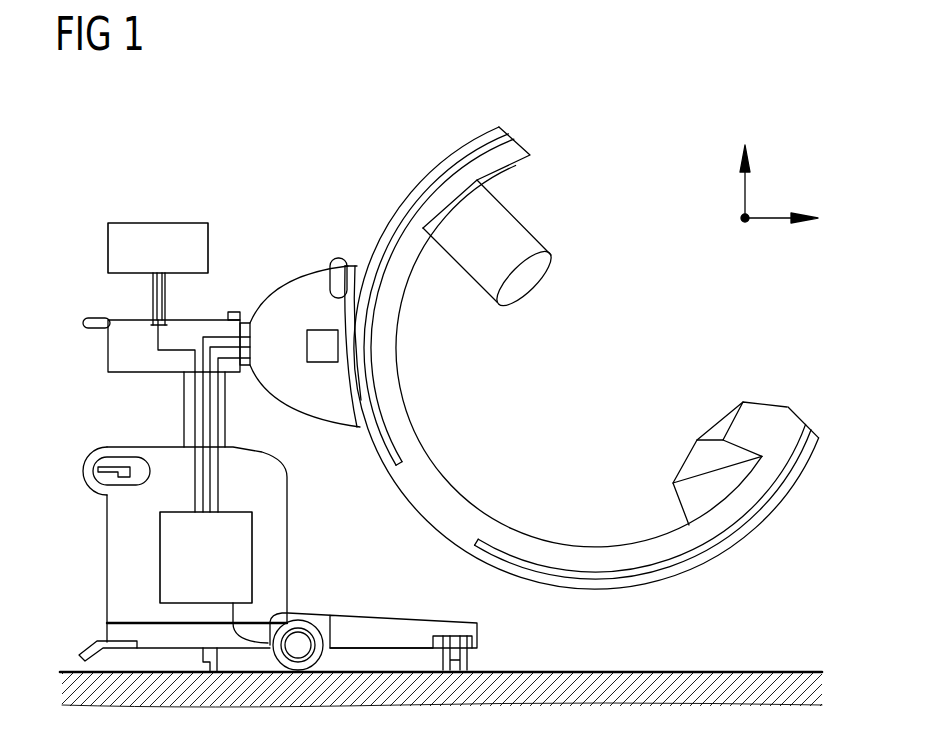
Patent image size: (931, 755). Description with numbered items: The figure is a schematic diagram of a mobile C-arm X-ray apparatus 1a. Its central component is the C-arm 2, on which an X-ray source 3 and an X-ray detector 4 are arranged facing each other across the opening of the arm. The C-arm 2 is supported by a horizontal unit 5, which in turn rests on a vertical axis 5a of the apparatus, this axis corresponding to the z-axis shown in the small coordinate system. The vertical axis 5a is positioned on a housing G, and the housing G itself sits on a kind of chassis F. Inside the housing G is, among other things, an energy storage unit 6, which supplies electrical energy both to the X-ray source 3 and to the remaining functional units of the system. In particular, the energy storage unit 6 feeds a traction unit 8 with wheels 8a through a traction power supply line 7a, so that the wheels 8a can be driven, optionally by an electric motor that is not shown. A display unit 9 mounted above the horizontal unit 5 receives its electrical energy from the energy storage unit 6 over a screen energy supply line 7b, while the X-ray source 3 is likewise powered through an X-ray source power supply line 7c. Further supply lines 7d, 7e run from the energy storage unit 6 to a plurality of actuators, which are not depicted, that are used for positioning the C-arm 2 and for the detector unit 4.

The C-arm X-ray apparatus 1a is at (608, 96).
The C-arm 2 is at (641, 550).
The X-ray source 3 is at (760, 415).
The X-ray detector 4 is at (511, 221).
The horizontal unit 5 is at (107, 347).
The vertical axis 5a is at (184, 410).
The energy storage unit 6 is at (160, 558).
The traction power supply line 7a is at (237, 615).
The screen energy supply line 7b is at (154, 333).
The X-ray source power supply line 7c is at (206, 333).
The supply line 7d is at (211, 428).
The supply line 7e is at (219, 486).
The traction unit 8 is at (374, 604).
The wheels 8a is at (309, 640).
The display unit 9 is at (157, 222).
The chassis F is at (106, 633).
The housing G is at (107, 592).